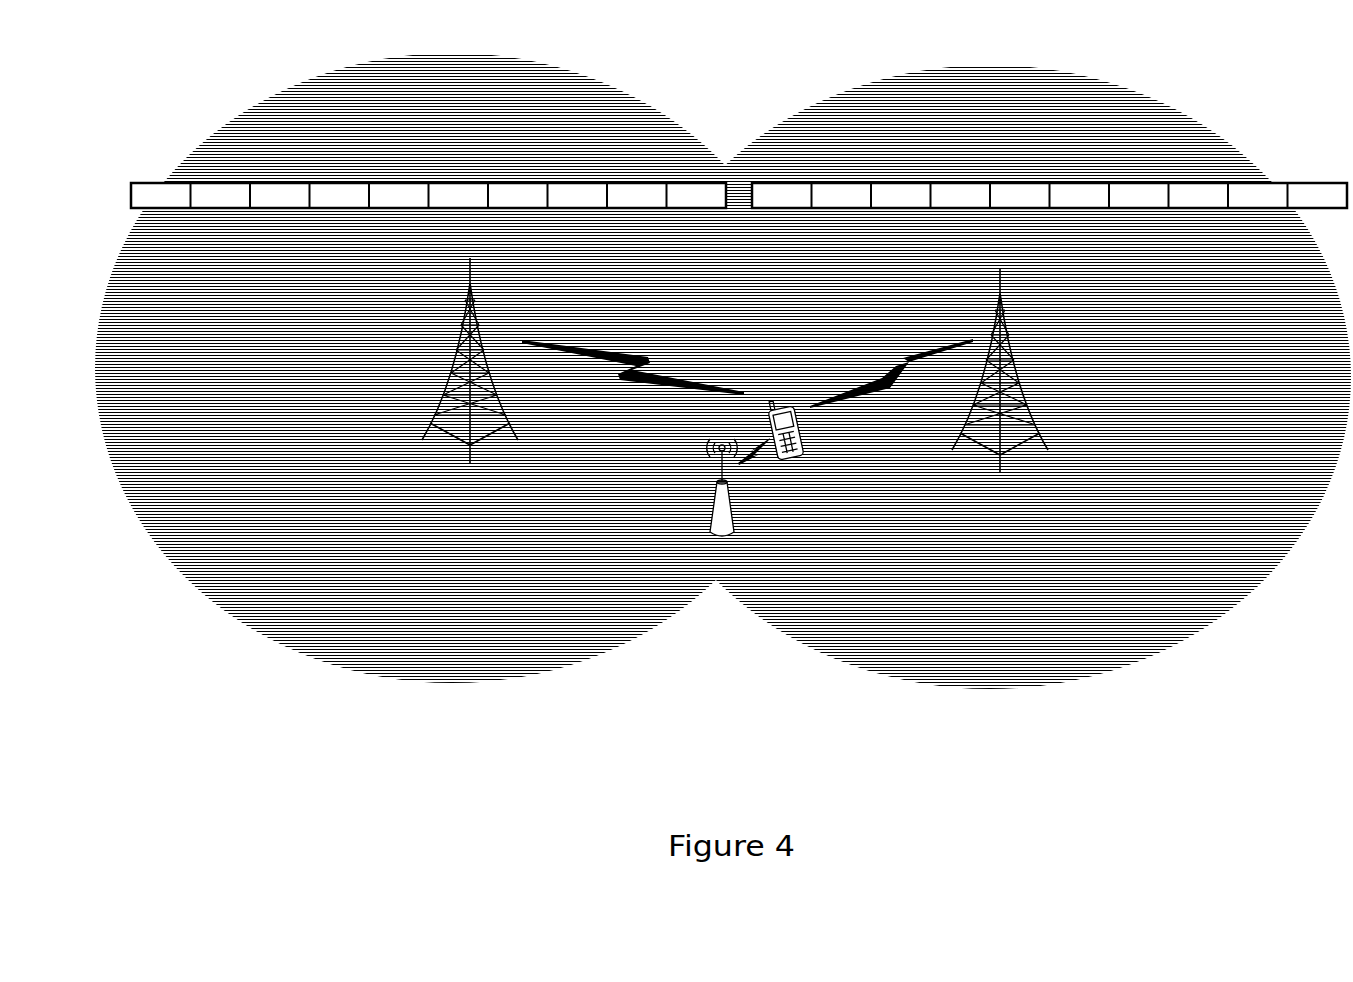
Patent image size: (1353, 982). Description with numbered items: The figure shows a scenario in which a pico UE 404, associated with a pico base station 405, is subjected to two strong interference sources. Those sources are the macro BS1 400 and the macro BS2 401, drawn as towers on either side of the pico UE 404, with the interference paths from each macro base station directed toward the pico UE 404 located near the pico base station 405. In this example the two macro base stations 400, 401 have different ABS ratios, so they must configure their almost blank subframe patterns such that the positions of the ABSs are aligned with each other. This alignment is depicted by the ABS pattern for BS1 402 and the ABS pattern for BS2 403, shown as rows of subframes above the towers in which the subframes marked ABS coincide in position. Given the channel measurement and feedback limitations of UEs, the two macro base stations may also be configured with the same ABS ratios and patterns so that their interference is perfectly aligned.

The macro BS1 400 is at (413, 378).
The macro BS2 401 is at (1038, 382).
The ABS pattern for BS1 402 is at (177, 182).
The ABS pattern for BS2 403 is at (1292, 183).
The pico UE 404 is at (823, 495).
The pico base station 405 is at (710, 495).